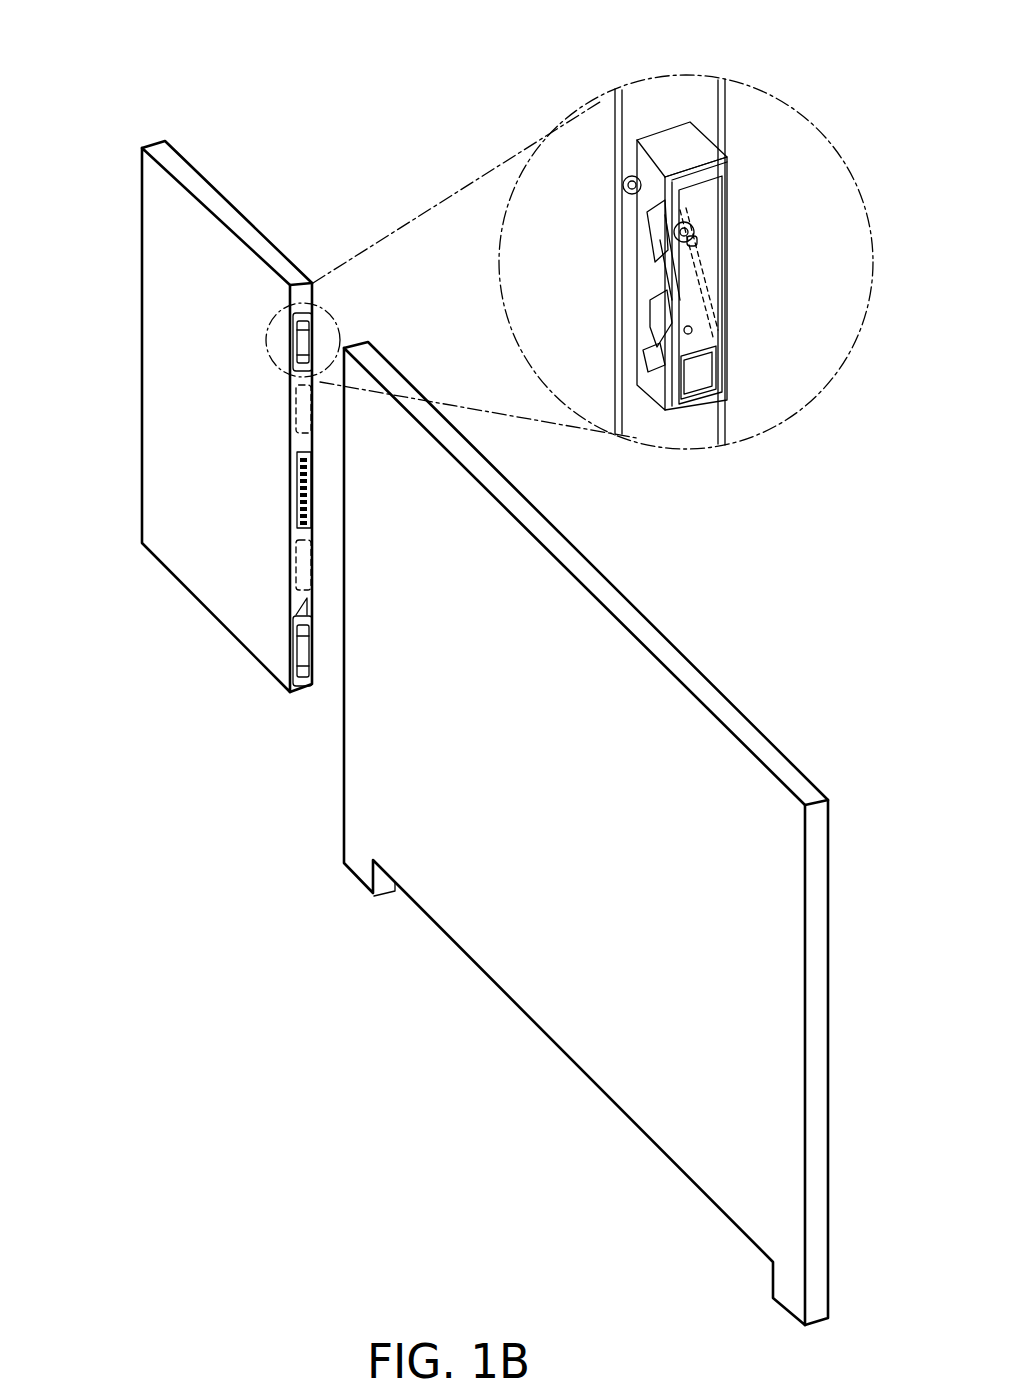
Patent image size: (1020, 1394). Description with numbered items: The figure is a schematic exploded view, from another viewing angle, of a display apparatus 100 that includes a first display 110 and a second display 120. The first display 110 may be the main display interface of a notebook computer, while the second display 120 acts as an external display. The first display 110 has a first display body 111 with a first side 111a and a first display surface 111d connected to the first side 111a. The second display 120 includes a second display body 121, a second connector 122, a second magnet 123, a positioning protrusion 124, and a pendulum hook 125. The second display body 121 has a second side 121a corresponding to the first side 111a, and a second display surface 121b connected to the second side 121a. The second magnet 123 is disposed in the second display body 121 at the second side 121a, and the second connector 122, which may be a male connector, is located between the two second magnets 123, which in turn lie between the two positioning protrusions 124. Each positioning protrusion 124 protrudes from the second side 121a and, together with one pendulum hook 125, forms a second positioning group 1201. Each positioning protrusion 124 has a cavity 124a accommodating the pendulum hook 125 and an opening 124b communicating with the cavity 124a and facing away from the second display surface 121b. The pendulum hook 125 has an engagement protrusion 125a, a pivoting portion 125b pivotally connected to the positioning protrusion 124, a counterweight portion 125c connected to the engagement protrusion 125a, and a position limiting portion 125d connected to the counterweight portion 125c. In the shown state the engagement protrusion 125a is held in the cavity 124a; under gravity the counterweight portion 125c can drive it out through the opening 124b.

The display apparatus 100 is at (138, 1240).
The first display 110 is at (575, 833).
The first display body 111 is at (792, 999).
The first side 111a is at (343, 778).
The first display surface 111d is at (678, 648).
The second display 120 is at (473, 367).
The second display body 121 is at (185, 568).
The second side 121a is at (300, 607).
The second display surface 121b is at (242, 212).
The second connector 122 is at (292, 492).
The second magnet 123 is at (290, 405).
The positioning protrusion 124 is at (589, 355).
The cavity 124a is at (648, 280).
The opening 124b is at (650, 370).
The pendulum hook 125 is at (671, 224).
The engagement protrusion 125a is at (660, 318).
The pivoting portion 125b is at (686, 215).
The counterweight portion 125c is at (700, 333).
The position limiting portion 125d is at (705, 362).
The second positioning group 1201 is at (604, 355).